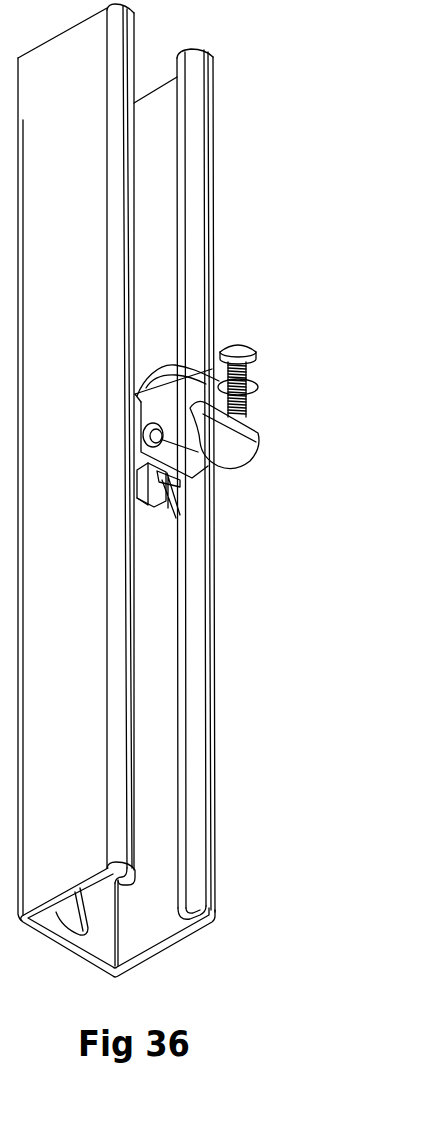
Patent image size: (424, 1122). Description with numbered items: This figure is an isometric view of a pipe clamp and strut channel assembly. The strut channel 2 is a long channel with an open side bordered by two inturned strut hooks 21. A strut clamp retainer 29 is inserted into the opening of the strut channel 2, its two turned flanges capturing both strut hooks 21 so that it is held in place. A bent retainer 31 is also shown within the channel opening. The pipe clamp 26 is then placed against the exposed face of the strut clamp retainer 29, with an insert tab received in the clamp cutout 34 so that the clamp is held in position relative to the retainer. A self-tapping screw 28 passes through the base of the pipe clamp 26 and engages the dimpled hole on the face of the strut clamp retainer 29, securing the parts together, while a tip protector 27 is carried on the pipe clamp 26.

The strut channel 2 is at (116, 492).
The strut hook 21 is at (123, 777).
The pipe clamp 26 is at (177, 421).
The tip protector 27 is at (224, 434).
The self-tapping screw 28 is at (242, 343).
The strut clamp retainer 29 is at (161, 512).
The bent retainer 31 is at (148, 479).
The clamp cutout 34 is at (177, 479).